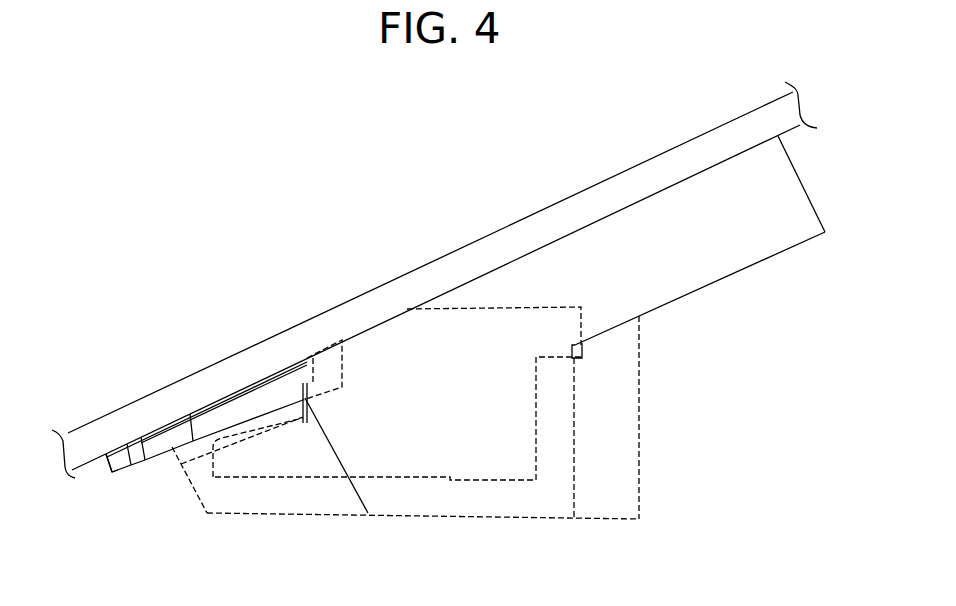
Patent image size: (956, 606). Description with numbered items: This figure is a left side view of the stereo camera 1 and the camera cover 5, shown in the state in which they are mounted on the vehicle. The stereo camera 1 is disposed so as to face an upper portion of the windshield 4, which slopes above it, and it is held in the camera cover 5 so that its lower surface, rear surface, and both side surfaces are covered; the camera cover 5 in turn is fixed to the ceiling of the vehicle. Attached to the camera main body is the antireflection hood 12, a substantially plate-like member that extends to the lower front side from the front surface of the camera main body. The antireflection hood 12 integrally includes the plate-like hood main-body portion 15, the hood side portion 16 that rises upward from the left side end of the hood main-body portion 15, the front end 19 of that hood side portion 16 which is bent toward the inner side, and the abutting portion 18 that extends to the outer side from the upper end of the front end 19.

The windshield 4 is at (579, 198).
The camera cover 5 is at (493, 498).
The stereo camera 1 is at (412, 481).
The hood side portion 16 is at (224, 416).
The front end 19 is at (163, 440).
The abutting portion 18 is at (140, 444).
The antireflection hood 12 is at (121, 480).
The hood main-body portion 15 is at (107, 476).